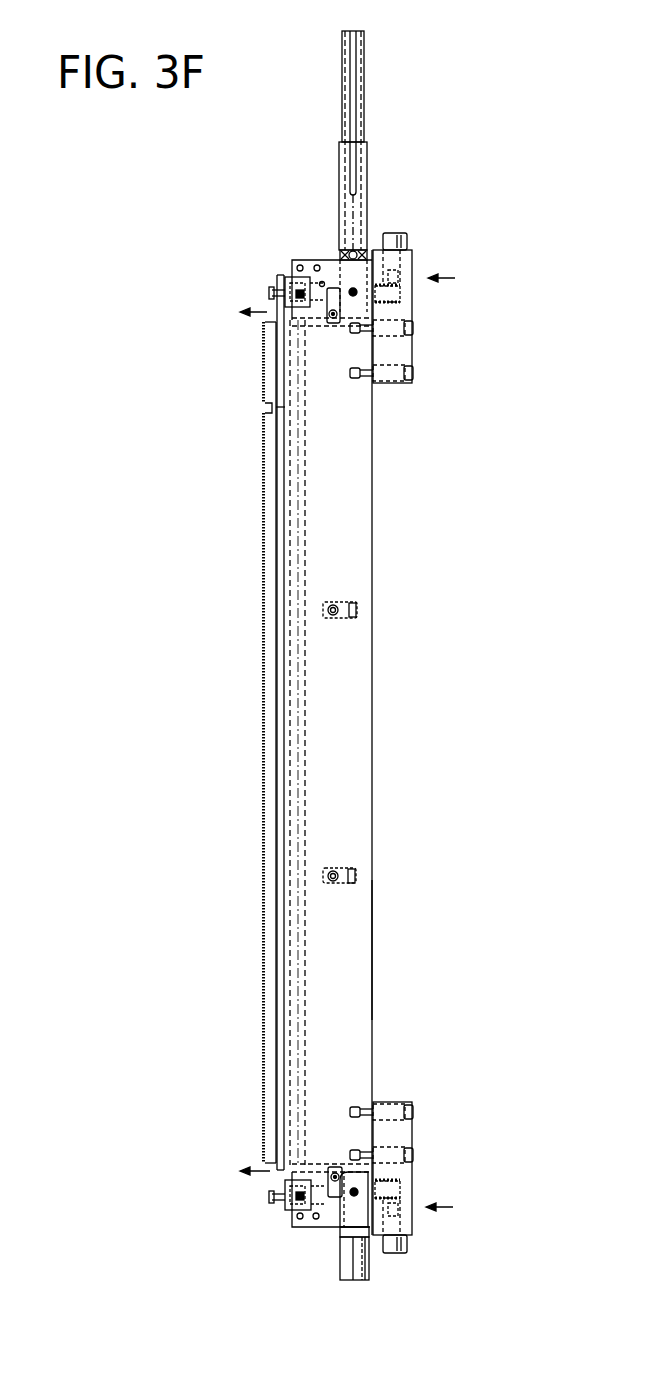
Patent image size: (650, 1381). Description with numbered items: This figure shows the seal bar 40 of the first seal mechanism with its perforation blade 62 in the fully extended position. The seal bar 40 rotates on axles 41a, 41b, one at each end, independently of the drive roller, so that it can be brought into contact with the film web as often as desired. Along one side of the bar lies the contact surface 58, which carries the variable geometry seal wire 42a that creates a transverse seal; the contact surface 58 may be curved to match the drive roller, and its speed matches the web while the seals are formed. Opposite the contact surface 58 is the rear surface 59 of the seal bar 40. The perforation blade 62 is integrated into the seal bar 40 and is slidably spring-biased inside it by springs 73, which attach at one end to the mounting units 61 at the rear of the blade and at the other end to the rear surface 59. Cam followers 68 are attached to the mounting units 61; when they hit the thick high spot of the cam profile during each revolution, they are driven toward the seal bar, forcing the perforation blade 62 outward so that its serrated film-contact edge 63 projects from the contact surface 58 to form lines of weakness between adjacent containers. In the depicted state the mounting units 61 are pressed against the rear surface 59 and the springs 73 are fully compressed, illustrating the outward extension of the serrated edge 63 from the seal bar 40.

The seal bar 40 is at (355, 723).
The axle 41a is at (367, 99).
The axle 41b is at (345, 1256).
The variable geometry seal wire 42a is at (277, 466).
The contact surface 58 is at (278, 762).
The rear surface 59 is at (374, 950).
The mounting unit 61 is at (405, 350).
The perforation blade 62 is at (272, 681).
The serrated film-contact edge 63 is at (270, 610).
The cam follower 68 is at (407, 241).
The spring 73 is at (366, 255).